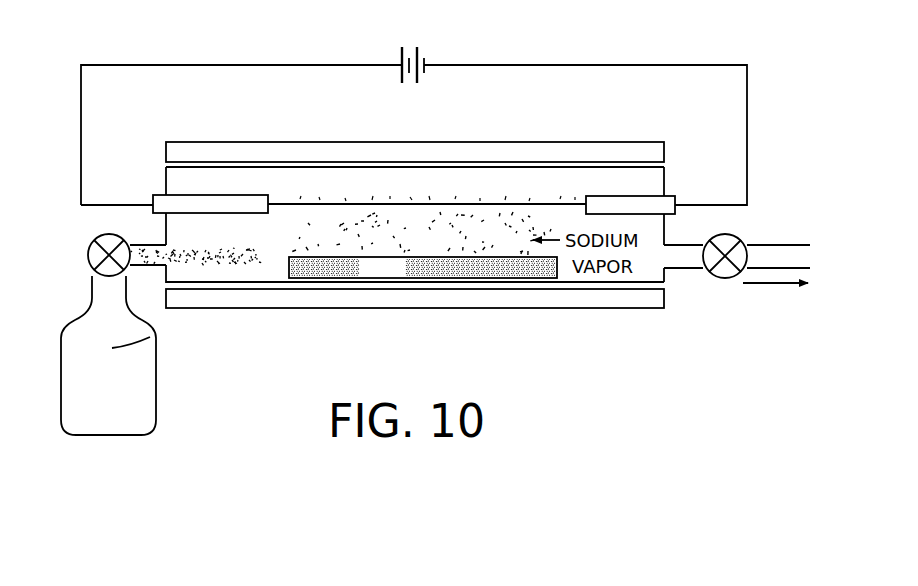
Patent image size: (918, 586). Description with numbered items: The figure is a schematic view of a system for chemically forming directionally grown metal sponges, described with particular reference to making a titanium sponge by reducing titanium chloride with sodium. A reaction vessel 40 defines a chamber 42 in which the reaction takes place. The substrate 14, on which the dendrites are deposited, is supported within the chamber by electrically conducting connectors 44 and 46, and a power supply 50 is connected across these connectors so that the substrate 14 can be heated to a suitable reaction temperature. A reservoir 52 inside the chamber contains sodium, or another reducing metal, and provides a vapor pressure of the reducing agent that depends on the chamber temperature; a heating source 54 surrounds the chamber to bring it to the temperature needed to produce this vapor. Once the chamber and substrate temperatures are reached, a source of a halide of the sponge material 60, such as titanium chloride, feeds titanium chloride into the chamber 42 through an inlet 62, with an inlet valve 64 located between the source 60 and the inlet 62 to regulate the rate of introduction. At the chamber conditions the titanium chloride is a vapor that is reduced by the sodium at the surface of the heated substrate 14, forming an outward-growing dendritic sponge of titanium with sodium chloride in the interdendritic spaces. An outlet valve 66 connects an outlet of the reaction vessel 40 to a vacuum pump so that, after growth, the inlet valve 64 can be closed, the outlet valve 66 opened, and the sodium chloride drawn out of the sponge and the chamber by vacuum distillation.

The substrate 14 is at (546, 198).
The reaction vessel 40 is at (667, 270).
The chamber 42 is at (245, 270).
The electrically conducting connector 44 is at (153, 208).
The electrically conducting connector 46 is at (678, 194).
The power supply 50 is at (401, 49).
The reservoir 52 is at (392, 268).
The heating source 54 is at (265, 140).
The source of a halide of the sponge material 60 is at (158, 393).
The inlet 62 is at (147, 270).
The inlet valve 64 is at (87, 266).
The outlet valve 66 is at (728, 283).